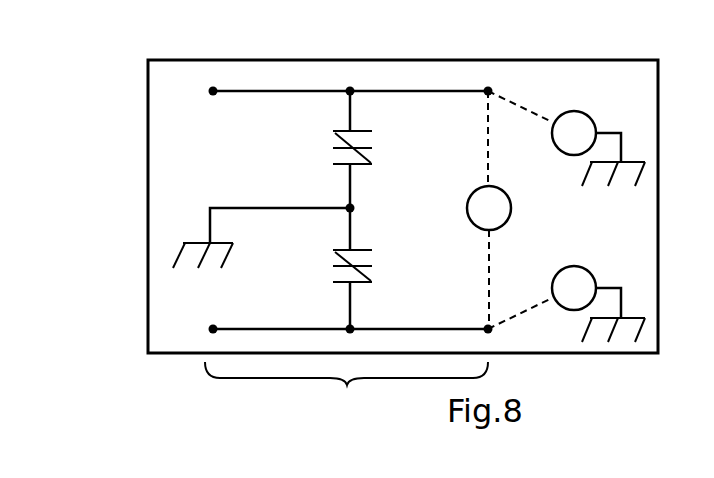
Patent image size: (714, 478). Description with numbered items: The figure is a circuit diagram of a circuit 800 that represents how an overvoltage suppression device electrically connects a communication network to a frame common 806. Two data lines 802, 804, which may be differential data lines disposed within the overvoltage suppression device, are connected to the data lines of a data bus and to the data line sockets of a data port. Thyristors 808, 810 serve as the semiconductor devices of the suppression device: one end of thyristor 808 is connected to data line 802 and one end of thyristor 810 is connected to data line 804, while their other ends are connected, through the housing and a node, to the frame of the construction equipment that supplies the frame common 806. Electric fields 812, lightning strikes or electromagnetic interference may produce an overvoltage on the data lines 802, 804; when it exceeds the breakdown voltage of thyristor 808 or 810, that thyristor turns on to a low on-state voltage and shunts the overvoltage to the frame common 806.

The circuit 800 is at (347, 385).
The data line 802 is at (237, 85).
The data line 804 is at (238, 322).
The frame common 806 is at (170, 256).
The thyristor 808 is at (363, 118).
The thyristor 810 is at (370, 290).
The electric fields 812 is at (576, 111).